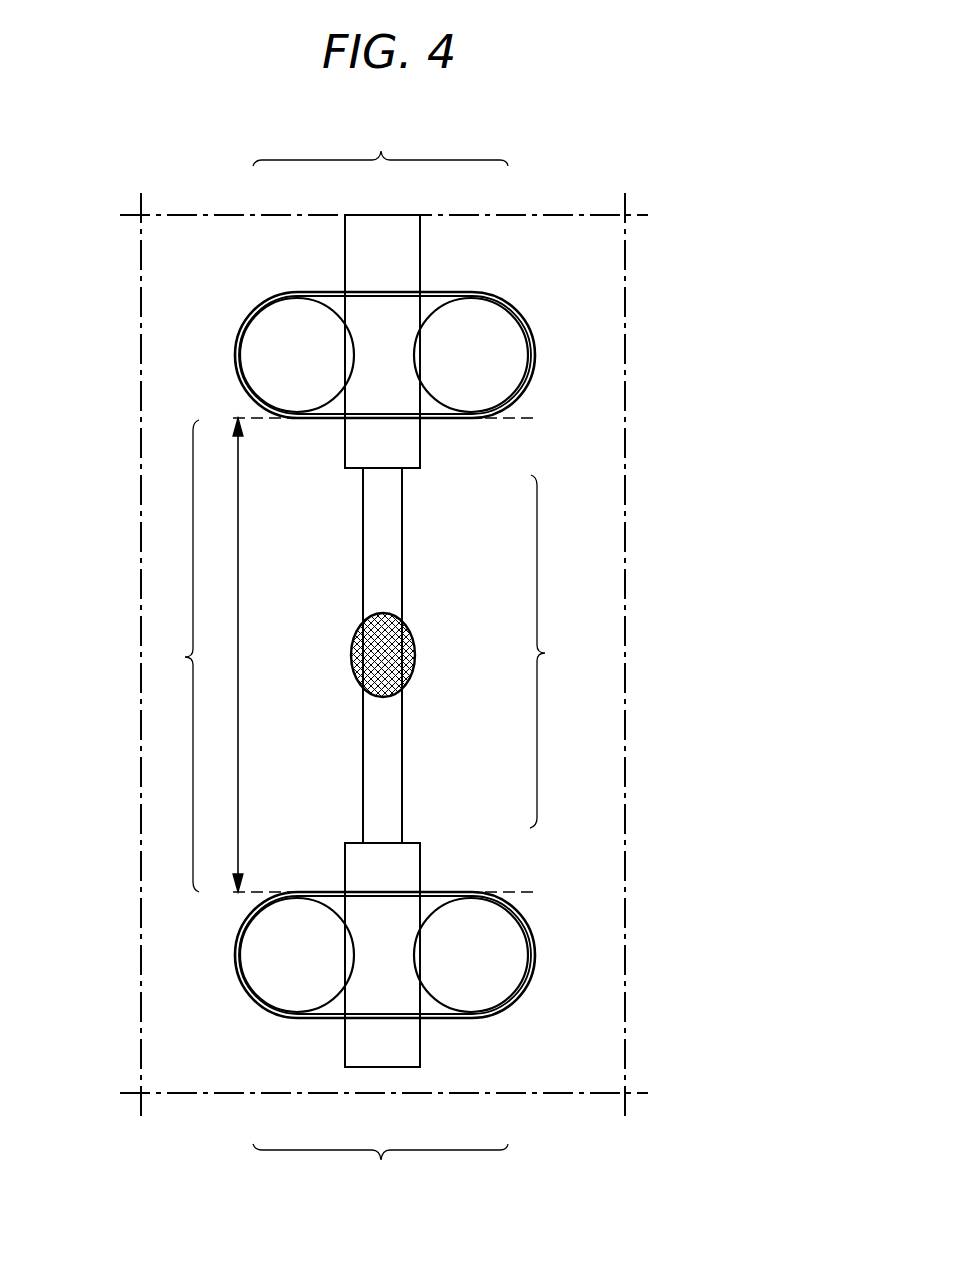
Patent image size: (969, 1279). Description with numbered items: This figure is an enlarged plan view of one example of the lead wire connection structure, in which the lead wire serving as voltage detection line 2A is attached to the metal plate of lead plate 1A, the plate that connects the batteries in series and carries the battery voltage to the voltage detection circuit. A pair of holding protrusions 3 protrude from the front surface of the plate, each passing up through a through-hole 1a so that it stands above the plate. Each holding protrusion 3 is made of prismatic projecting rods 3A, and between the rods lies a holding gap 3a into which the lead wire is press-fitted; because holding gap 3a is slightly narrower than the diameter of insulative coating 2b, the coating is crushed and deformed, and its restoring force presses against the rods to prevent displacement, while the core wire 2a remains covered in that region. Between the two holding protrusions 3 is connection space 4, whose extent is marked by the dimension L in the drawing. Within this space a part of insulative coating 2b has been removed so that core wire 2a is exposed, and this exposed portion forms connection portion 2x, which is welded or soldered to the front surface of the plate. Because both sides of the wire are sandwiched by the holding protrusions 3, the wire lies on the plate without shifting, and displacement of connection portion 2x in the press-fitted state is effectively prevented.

The lead plate 1A is at (582, 547).
The through-hole 1a is at (233, 355).
The voltage detection line 2A is at (565, 651).
The core wire 2a is at (388, 593).
The insulative coating 2b is at (408, 447).
The connection portion 2x is at (422, 672).
The holding protrusion 3 is at (380, 655).
The projecting rod 3A is at (295, 340).
The holding gap 3a is at (414, 366).
The connection space 4 is at (178, 656).
The length L is at (228, 655).